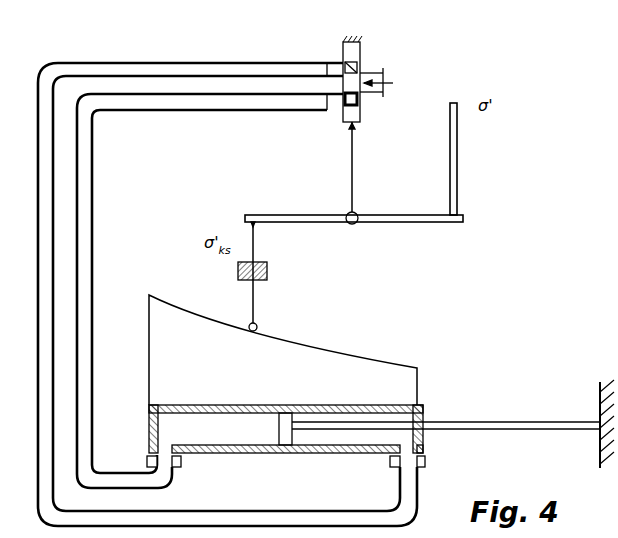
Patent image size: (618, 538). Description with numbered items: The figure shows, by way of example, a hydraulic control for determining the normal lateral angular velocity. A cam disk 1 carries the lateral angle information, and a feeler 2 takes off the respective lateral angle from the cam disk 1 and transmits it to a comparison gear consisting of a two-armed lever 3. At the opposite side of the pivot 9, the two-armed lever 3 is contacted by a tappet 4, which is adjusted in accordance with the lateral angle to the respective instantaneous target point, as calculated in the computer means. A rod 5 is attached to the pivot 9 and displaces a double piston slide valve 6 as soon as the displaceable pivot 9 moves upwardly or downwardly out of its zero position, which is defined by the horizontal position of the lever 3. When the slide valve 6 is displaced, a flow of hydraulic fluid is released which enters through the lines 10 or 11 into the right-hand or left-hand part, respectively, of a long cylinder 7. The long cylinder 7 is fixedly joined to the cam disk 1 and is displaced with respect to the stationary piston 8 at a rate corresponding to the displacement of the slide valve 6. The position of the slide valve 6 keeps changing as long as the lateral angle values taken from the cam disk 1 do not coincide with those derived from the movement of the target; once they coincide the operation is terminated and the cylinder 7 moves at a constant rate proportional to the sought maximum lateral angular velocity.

The cam disk 1 is at (153, 347).
The feeler 2 is at (256, 302).
The two-armed lever 3 is at (399, 223).
The tappet 4 is at (458, 158).
The rod 5 is at (352, 160).
The double piston slide valve 6 is at (358, 65).
The long cylinder 7 is at (150, 425).
The stationary piston 8 is at (290, 453).
The pivot 9 is at (349, 226).
The line 10 is at (88, 236).
The line 11 is at (44, 304).